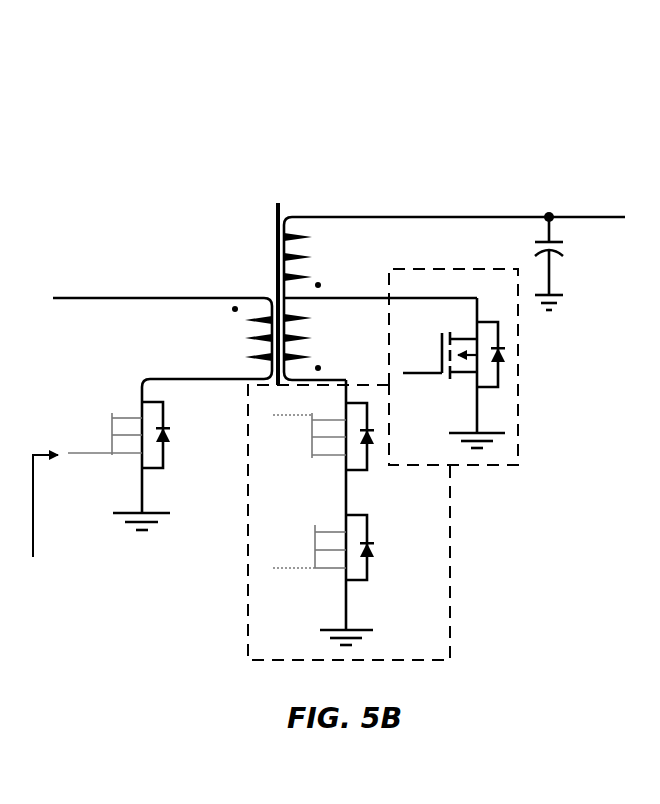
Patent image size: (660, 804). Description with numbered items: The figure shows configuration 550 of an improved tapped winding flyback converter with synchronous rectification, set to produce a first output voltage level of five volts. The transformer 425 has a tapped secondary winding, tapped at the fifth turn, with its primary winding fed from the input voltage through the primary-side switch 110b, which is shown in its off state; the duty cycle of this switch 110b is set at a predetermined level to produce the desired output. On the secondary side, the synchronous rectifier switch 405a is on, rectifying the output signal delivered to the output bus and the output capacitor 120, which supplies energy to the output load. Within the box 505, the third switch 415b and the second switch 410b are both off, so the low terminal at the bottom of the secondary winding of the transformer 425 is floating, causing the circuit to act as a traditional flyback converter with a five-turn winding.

The configuration 550 is at (264, 137).
The transformer 425 is at (268, 261).
The switch Q0 110b is at (128, 396).
The output capacitor 120 is at (567, 266).
The switch Q1 405a is at (548, 382).
The box 505 is at (274, 667).
The switch Q3 415b is at (419, 455).
The switch Q2 410b is at (428, 582).